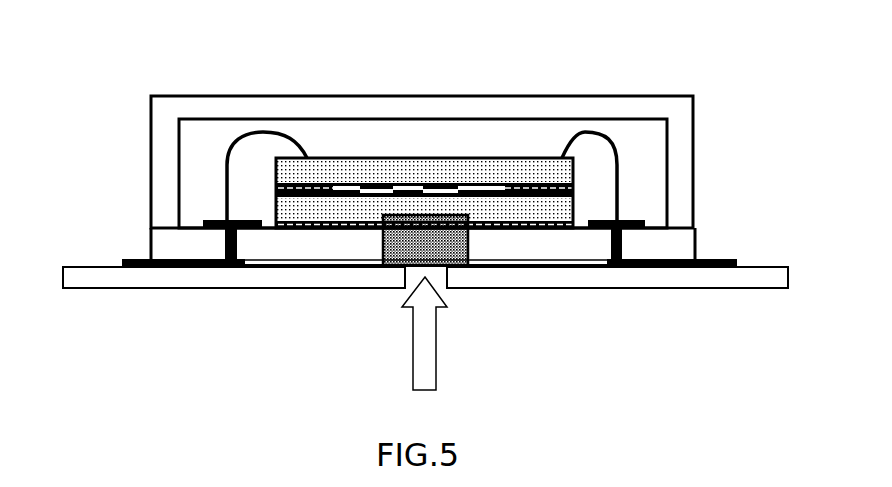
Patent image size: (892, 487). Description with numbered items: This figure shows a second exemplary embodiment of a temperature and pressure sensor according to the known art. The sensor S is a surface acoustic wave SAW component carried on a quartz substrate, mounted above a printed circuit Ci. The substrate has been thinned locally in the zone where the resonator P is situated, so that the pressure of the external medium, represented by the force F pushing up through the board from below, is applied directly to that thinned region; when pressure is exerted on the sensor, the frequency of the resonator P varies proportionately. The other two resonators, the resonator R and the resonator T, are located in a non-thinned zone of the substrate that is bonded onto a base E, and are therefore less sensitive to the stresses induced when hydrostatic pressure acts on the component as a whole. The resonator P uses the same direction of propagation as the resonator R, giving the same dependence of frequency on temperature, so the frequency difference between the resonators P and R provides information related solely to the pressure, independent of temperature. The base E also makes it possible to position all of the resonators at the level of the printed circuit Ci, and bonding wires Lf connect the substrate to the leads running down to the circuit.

The base E is at (165, 245).
The printed circuit Ci is at (763, 280).
The SAW sensor chip S is at (374, 197).
The surface acoustic wave device layer SAW is at (420, 223).
The resonator R is at (305, 210).
The resonator P is at (425, 210).
The transducer T is at (515, 210).
The bonding wire Lf is at (607, 134).
The applied force F is at (425, 316).